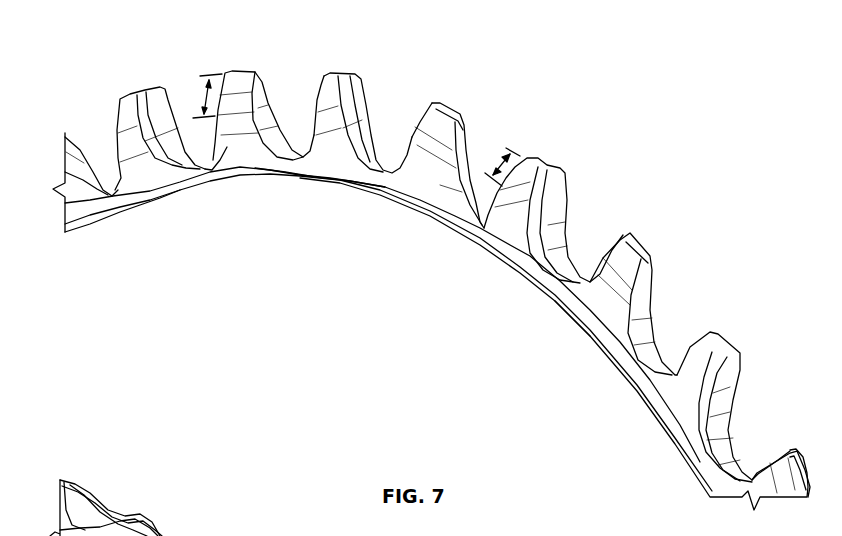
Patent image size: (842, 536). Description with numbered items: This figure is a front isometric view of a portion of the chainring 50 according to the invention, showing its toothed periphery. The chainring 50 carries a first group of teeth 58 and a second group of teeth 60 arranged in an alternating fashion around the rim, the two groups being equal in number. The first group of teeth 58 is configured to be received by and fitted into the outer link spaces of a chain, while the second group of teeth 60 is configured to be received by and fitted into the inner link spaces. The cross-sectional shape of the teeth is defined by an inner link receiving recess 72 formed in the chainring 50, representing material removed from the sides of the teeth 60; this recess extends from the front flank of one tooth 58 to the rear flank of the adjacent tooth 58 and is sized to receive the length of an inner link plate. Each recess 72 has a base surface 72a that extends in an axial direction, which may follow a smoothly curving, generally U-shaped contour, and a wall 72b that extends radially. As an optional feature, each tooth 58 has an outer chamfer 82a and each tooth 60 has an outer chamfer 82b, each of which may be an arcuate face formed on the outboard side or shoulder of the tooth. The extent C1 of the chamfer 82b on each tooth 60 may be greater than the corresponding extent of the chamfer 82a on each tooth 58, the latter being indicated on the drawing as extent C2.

The chainring 50 is at (431, 293).
The first group of teeth 58 is at (360, 77).
The second group of teeth 60 is at (460, 108).
The inner link receiving recess 72 is at (353, 181).
The base surface 72a is at (167, 170).
The wall 72b is at (190, 174).
The outer chamfer 82a is at (318, 97).
The outer chamfer 82b is at (414, 133).
The extent of the outer chamfer C1 is at (201, 96).
The second chain-engaging width C2 is at (502, 158).